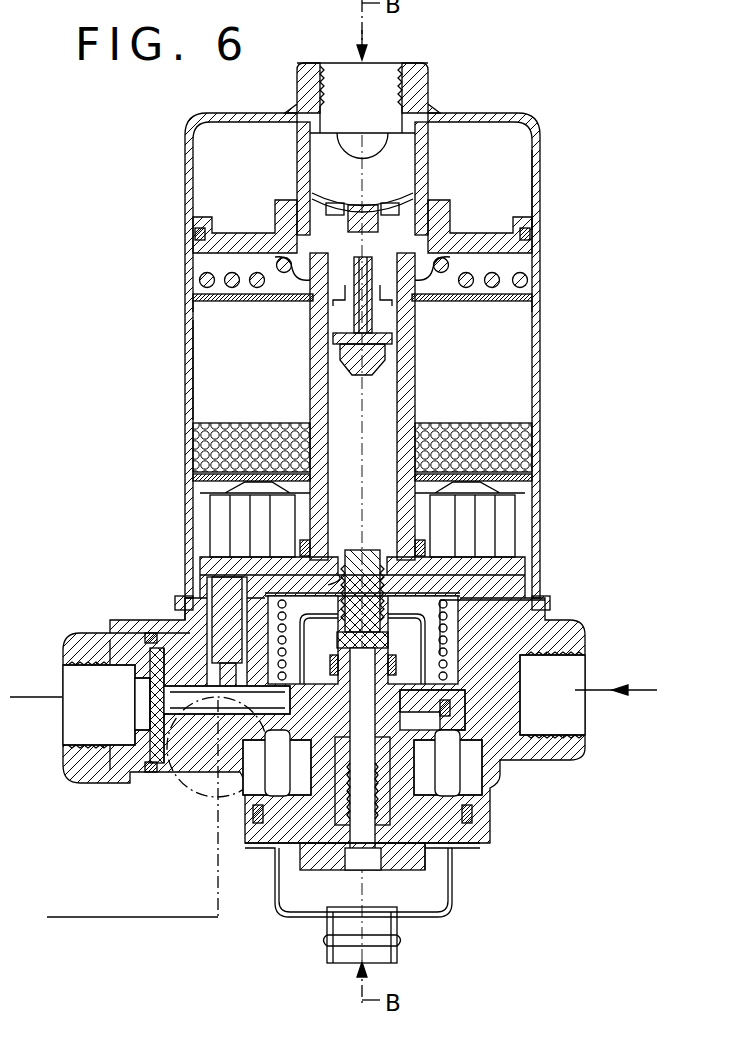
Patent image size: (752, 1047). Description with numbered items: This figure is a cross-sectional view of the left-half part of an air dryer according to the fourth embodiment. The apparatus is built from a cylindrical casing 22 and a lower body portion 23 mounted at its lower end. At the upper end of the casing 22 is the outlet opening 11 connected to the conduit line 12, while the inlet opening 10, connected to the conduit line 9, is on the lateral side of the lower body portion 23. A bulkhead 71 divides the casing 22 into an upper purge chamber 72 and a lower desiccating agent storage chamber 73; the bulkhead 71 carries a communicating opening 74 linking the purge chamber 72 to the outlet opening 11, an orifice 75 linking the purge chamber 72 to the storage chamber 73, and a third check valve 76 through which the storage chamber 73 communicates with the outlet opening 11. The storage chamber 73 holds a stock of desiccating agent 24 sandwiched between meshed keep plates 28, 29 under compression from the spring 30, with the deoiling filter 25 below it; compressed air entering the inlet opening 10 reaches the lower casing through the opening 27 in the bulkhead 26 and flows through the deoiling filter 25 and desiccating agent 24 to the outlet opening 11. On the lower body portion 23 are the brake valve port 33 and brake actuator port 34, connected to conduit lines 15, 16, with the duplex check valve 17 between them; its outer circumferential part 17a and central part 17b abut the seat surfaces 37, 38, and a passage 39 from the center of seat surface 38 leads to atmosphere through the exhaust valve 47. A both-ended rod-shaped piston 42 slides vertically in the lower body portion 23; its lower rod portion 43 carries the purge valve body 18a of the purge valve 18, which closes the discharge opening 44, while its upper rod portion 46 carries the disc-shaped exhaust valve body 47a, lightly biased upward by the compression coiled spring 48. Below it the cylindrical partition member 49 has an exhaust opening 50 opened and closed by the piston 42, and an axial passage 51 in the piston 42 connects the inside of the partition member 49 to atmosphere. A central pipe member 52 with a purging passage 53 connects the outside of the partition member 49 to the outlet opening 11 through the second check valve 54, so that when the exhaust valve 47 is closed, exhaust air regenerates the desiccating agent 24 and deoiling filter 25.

The conduit line 9 is at (634, 690).
The inlet opening 10 is at (569, 741).
The outlet opening 11 is at (326, 76).
The conduit line 12 is at (363, 33).
The conduit line 15 is at (35, 697).
The conduit line 16 is at (135, 922).
The duplex check valve 17 is at (150, 736).
The outer circumferential part 17a is at (172, 776).
The central part 17b is at (150, 704).
The purge valve 18 is at (446, 908).
The purge valve body 18a is at (432, 856).
The casing 22 is at (541, 362).
The lower body portion 23 is at (490, 778).
The desiccating agent 24 is at (530, 437).
The deoiling filter 25 is at (512, 521).
The bulkhead 26 is at (215, 572).
The opening 27 is at (506, 580).
The keep plate 28 is at (531, 298).
The keep plate 29 is at (531, 477).
The spring 30 is at (524, 281).
The brake valve port 33 is at (82, 724).
The brake actuator port 34 is at (195, 796).
The seat surface 37 is at (160, 756).
The seat surface 38 is at (150, 641).
The passage 39 is at (228, 690).
The piston 42 is at (432, 746).
The lower rod portion 43 is at (280, 851).
The discharge opening 44 is at (318, 858).
The upper rod portion 46 is at (362, 558).
The exhaust valve 47 is at (335, 598).
The exhaust valve body 47a is at (328, 585).
The compression coiled spring 48 is at (448, 606).
The partition member 49 is at (456, 672).
The exhaust opening 50 is at (322, 630).
The passage 51 is at (370, 860).
The pipe member 52 is at (310, 377).
The purging passage 53 is at (396, 386).
The second check valve 54 is at (337, 338).
The bulkhead 71 is at (483, 235).
The purge chamber 72 is at (517, 153).
The desiccating agent storage chamber 73 is at (205, 392).
The communicating opening 74 is at (300, 150).
The orifice 75 is at (248, 250).
The third check valve 76 is at (380, 201).